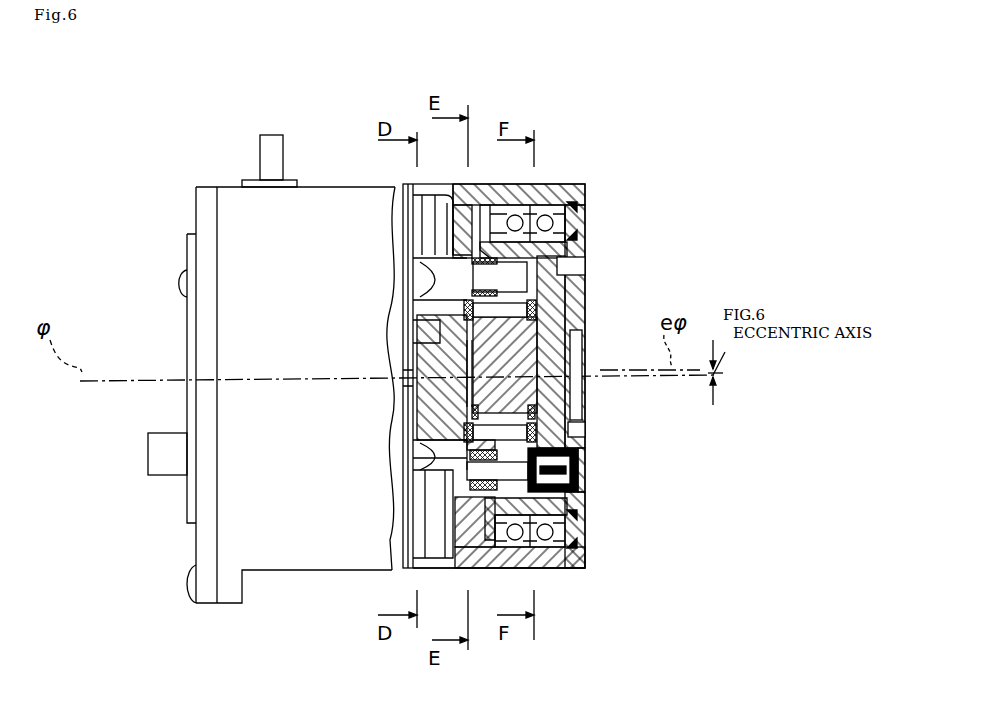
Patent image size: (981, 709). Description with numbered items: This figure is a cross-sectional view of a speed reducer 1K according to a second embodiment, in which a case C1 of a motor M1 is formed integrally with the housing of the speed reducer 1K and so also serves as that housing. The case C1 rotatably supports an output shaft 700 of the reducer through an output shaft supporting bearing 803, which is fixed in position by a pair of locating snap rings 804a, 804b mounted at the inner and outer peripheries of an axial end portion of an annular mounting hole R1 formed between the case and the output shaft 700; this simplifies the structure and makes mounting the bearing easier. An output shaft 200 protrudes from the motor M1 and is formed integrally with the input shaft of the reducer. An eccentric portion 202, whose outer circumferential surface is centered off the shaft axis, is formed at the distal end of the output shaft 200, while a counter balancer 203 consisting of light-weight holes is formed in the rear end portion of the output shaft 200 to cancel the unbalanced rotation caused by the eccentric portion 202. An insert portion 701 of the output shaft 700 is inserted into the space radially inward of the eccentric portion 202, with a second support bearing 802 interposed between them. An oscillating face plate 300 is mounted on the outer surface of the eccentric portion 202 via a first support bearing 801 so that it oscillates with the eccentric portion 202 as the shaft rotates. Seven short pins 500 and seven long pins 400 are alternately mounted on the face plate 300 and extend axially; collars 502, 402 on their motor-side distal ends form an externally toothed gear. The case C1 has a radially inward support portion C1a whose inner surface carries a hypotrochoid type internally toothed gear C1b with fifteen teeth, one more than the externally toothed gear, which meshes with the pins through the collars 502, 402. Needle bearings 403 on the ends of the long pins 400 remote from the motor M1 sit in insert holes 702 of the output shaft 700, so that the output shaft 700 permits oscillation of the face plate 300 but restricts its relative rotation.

The speed reducer 1K is at (103, 141).
The motor M1 is at (230, 190).
The eccentric portion 202 is at (420, 296).
The counter balancer 203 is at (413, 342).
The output shaft 200 is at (400, 393).
The case C1 is at (395, 196).
The internally toothed gear C1b is at (395, 235).
The support portion C1a is at (565, 570).
The output shaft supporting bearing 803 is at (545, 200).
The locating snap ring 804b is at (580, 205).
The annular mounting hole R1 is at (583, 218).
The collar 502 is at (583, 244).
The short pin 500 is at (583, 266).
The oscillating face plate 300 is at (583, 295).
The output shaft 700 is at (583, 316).
The first support bearing 801 is at (583, 319).
The second support bearing 802 is at (583, 353).
The insert portion 701 is at (583, 389).
The needle bearing 403 is at (583, 440).
The long pin 400 is at (583, 462).
The insert hole 702 is at (583, 485).
The collar 402 is at (583, 503).
The locating snap ring 804a is at (583, 533).